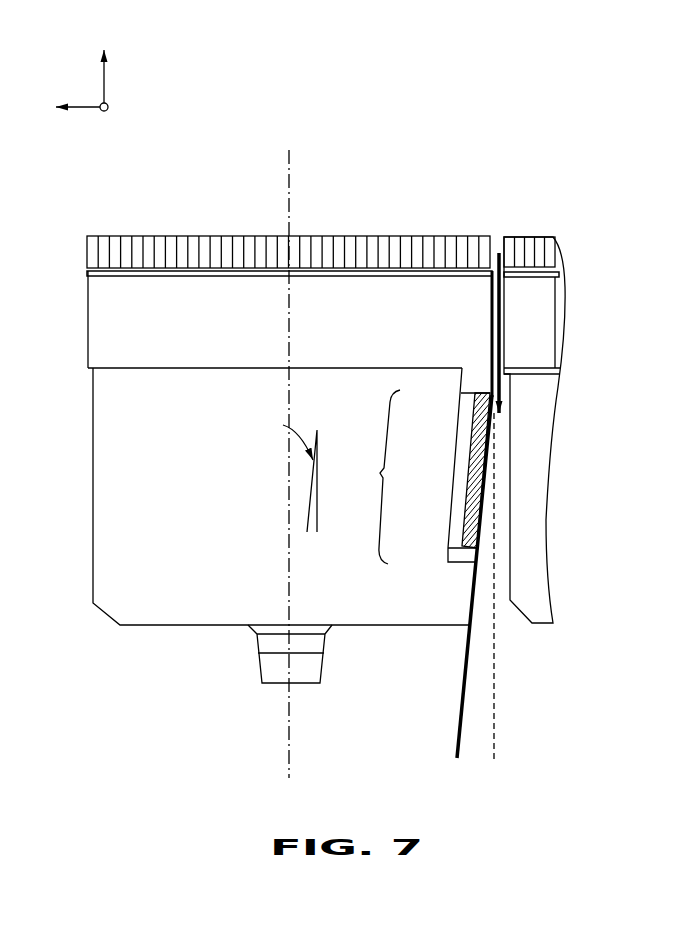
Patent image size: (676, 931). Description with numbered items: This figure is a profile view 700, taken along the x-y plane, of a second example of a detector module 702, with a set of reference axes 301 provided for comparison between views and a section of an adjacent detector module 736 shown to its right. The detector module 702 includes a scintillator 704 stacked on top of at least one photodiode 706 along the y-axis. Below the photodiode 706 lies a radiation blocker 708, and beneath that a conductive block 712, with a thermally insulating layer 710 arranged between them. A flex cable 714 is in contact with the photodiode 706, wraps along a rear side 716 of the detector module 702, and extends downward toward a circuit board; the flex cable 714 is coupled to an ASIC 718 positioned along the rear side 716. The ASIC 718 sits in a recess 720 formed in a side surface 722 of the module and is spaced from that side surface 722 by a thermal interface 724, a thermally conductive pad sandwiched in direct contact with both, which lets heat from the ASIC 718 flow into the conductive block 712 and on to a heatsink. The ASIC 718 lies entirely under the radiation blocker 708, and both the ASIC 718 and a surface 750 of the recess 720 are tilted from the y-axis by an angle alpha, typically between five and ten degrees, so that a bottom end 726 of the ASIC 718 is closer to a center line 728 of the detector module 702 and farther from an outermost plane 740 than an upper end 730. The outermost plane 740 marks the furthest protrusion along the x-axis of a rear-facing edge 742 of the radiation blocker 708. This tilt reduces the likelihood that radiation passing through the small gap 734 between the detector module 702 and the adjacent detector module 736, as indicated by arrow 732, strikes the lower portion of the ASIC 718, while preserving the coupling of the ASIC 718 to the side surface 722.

The reference axes 301 is at (80, 55).
The profile view 700 is at (247, 82).
The detector module 702 is at (137, 190).
The scintillator 704 is at (364, 236).
The photodiode 706 is at (87, 271).
The radiation blocker 708 is at (241, 329).
The thermally insulating layer 710 is at (88, 368).
The conductive block 712 is at (226, 503).
The flex cable 714 is at (463, 681).
The rear side 716 is at (485, 622).
The ASIC 718 is at (463, 508).
The recess 720 is at (380, 475).
The side surface 722 is at (448, 560).
The thermal interface 724 is at (472, 437).
The bottom end 726 is at (477, 548).
The center line 728 is at (292, 175).
The upper end 730 is at (491, 396).
The arrow 732 is at (508, 380).
The gap 734 is at (497, 235).
The adjacent detector module 736 is at (526, 235).
The outermost plane 740 is at (495, 717).
The rear-facing edge 742 is at (490, 262).
The surface of the recess 750 is at (458, 477).